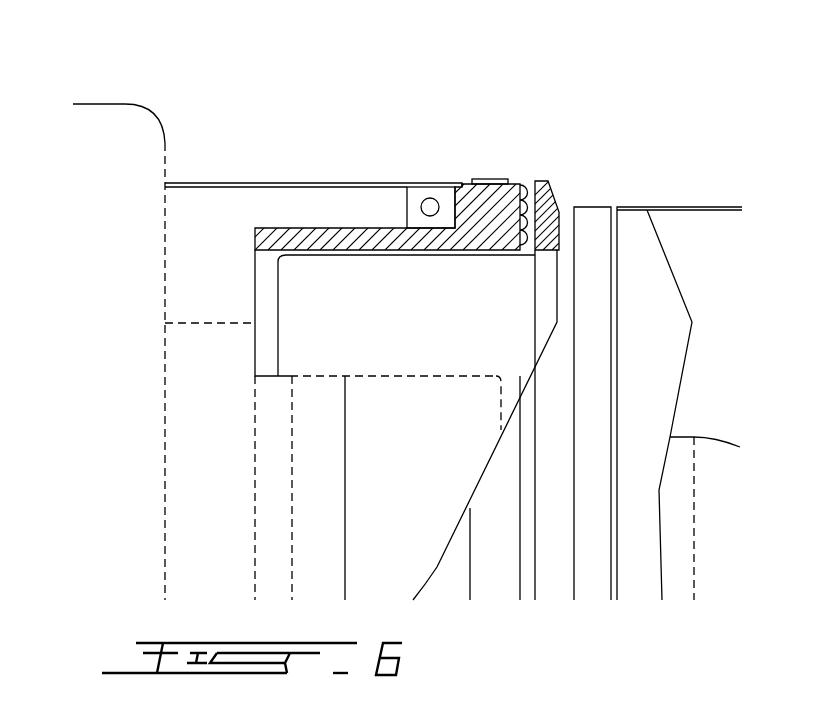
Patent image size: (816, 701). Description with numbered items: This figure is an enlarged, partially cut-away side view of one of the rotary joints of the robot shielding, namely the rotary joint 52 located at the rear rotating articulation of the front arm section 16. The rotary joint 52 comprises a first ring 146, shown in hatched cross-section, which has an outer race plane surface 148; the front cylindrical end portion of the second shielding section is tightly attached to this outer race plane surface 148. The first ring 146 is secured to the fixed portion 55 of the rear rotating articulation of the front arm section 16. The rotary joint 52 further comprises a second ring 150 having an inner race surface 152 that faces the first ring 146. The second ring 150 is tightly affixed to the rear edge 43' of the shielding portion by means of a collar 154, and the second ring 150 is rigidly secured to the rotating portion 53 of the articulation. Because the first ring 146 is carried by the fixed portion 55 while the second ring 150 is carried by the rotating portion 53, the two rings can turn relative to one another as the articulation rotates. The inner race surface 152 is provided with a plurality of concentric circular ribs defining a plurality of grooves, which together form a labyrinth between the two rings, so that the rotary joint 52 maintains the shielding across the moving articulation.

The front arm section 16 is at (720, 440).
The rear edge of the shielding portion 43' is at (679, 356).
The rotary joint 52 is at (508, 158).
The rotating portion 53 is at (392, 435).
The fixed portion 55 is at (215, 367).
The first ring 146 is at (461, 184).
The outer race plane surface 148 is at (535, 250).
The second ring 150 is at (560, 190).
The inner race surface 152 is at (521, 181).
The collar 154 is at (588, 548).